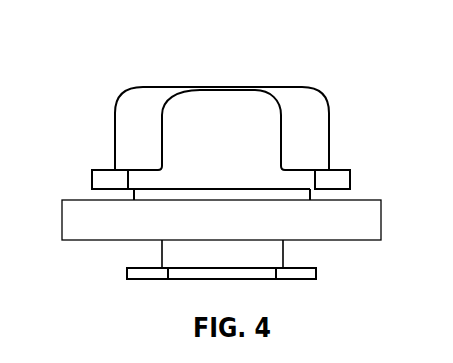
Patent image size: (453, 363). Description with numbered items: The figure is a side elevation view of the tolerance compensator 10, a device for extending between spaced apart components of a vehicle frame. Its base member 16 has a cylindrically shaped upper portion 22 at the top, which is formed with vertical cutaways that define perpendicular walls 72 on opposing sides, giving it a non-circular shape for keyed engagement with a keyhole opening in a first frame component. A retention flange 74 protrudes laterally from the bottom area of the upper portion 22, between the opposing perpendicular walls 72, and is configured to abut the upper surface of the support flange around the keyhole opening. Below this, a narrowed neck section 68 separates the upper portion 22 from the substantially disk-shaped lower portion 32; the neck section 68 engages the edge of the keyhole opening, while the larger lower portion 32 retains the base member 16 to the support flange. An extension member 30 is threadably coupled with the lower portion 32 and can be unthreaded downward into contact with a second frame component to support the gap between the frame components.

The tolerance compensator 10 is at (106, 70).
The base member 16 is at (338, 127).
The upper portion 22 is at (306, 102).
The perpendicular walls 72 is at (215, 118).
The retention flange 74 is at (100, 180).
The neck section 68 is at (310, 191).
The lower portion 32 is at (75, 217).
The extension member 30 is at (152, 254).